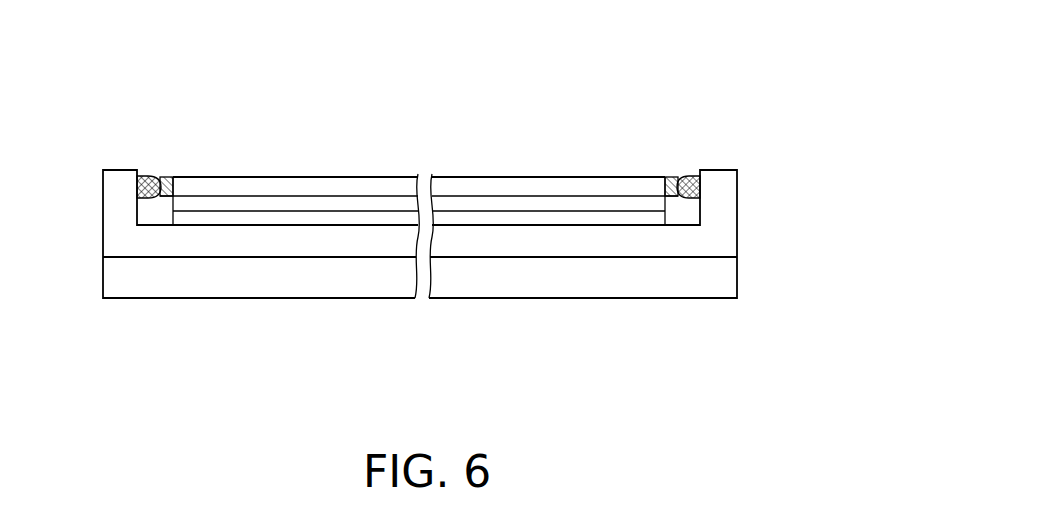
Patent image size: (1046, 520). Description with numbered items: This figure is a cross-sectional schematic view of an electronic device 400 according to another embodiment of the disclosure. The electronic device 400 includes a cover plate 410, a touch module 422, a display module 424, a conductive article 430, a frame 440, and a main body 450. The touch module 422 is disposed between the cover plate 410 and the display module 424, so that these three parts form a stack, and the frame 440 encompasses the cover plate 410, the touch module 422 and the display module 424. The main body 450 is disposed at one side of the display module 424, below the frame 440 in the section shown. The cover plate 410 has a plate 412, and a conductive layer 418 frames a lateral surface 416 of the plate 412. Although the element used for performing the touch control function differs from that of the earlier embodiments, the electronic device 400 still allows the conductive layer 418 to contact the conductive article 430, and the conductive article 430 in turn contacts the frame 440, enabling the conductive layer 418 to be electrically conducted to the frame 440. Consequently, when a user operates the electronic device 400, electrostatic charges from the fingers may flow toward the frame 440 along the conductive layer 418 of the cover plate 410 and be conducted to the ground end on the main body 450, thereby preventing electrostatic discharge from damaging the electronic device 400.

The electronic device 400 is at (116, 117).
The cover plate 410 is at (663, 99).
The plate 412 is at (537, 187).
The lateral surface 416 is at (663, 190).
The conductive layer 418 is at (672, 180).
The touch module 422 is at (395, 203).
The display module 424 is at (315, 220).
The conductive article 430 is at (686, 175).
The frame 440 is at (737, 226).
The main body 450 is at (737, 275).